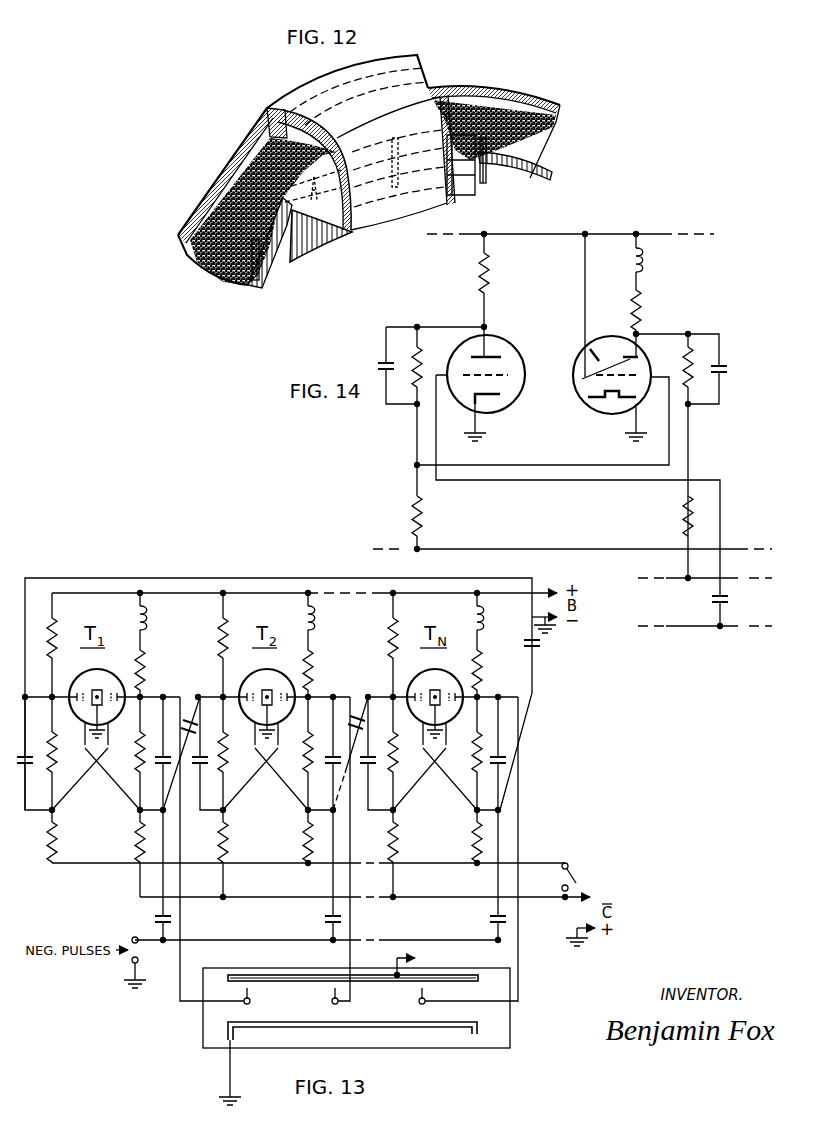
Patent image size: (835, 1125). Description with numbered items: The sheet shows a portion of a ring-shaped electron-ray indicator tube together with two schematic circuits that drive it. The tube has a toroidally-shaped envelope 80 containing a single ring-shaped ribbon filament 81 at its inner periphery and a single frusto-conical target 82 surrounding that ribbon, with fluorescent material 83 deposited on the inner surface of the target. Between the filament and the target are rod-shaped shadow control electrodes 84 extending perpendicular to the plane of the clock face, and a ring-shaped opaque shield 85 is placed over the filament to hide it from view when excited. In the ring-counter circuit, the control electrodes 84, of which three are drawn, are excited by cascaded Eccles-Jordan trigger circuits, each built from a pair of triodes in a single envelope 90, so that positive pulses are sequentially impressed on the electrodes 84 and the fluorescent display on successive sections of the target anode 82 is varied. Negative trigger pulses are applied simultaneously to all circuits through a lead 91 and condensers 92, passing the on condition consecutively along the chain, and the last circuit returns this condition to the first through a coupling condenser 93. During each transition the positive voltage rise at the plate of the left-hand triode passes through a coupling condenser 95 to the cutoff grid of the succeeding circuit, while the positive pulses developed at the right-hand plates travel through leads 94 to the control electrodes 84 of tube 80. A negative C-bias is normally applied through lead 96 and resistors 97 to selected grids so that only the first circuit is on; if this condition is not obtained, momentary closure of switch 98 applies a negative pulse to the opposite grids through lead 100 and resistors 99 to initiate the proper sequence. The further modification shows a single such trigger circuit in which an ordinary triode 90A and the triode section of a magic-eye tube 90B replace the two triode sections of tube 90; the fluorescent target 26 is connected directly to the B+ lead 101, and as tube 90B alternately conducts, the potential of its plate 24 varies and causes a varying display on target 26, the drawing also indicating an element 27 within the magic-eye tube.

In FIG. 12, the toroidally-shaped envelope 80 is at (377, 73).
In FIG. 13, the toroidally-shaped envelope 80 is at (203, 1032).
In FIG. 12, the ribbon filament 81 is at (302, 250).
In FIG. 13, the ribbon filament 81 is at (397, 1030).
In FIG. 12, the frusto-conical target 82 is at (228, 177).
In FIG. 13, the frusto-conical target 82 is at (245, 975).
In FIG. 12, the fluorescent material 83 is at (210, 267).
In FIG. 12, the shadow control electrodes 84 is at (259, 280).
In FIG. 13, the shadow control electrodes 84 is at (322, 1001).
In FIG. 12, the opaque shield 85 is at (463, 197).
In FIG. 13, the envelope 90 is at (94, 671).
In FIG. 14, the tube 90A is at (502, 344).
In FIG. 14, the magic-eye tube 90B is at (581, 411).
In FIG. 14, the plate 24 is at (638, 357).
In FIG. 14, the fluorescent target 26 is at (590, 349).
In FIG. 14, the control electrode 27 is at (582, 379).
In FIG. 14, the lead 91 is at (668, 626).
In FIG. 13, the lead 91 is at (210, 940).
In FIG. 14, the condensers 92 is at (727, 602).
In FIG. 13, the condensers 92 is at (156, 918).
In FIG. 13, the coupling condenser 93 is at (540, 648).
In FIG. 13, the leads 94 is at (181, 895).
In FIG. 13, the coupling condenser 95 is at (190, 712).
In FIG. 14, the lead 96 is at (730, 578).
In FIG. 13, the lead 96 is at (532, 900).
In FIG. 14, the resistors 97 is at (682, 515).
In FIG. 13, the resistors 97 is at (136, 847).
In FIG. 13, the switch 98 is at (576, 880).
In FIG. 14, the resistors 99 is at (410, 515).
In FIG. 13, the resistors 99 is at (57, 838).
In FIG. 14, the lead 100 is at (727, 549).
In FIG. 13, the lead 100 is at (540, 862).
In FIG. 14, the B+ lead 101 is at (604, 234).
In FIG. 13, the B+ lead 101 is at (282, 593).